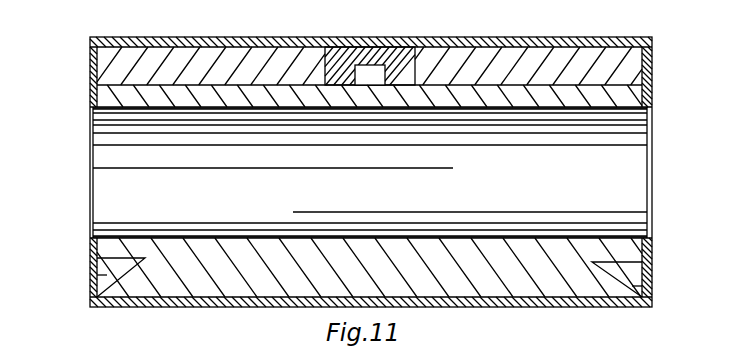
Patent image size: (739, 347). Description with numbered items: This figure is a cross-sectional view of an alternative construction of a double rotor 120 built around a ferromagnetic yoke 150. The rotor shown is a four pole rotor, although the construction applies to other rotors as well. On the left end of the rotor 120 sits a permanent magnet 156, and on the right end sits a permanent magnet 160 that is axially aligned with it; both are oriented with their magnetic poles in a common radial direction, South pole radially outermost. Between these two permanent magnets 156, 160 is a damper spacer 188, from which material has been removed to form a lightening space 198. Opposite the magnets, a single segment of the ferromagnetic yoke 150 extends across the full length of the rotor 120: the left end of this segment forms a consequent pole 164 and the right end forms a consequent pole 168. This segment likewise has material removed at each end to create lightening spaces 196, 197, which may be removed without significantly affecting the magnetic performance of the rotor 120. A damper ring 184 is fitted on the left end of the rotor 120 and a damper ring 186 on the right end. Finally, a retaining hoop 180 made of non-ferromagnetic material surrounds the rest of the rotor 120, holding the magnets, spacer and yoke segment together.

The double rotor 120 is at (562, 26).
The ferromagnetic yoke 150 is at (280, 108).
The permanent magnet 156 is at (258, 46).
The permanent magnet 160 is at (617, 55).
The consequent pole 164 is at (248, 275).
The consequent pole 168 is at (508, 276).
The retaining hoop 180 is at (508, 43).
The damper ring 184 is at (90, 58).
The damper ring 186 is at (652, 66).
The damper spacer 188 is at (406, 48).
The lightening space 196 is at (90, 283).
The lightening space 197 is at (652, 276).
The lightening space 198 is at (368, 68).